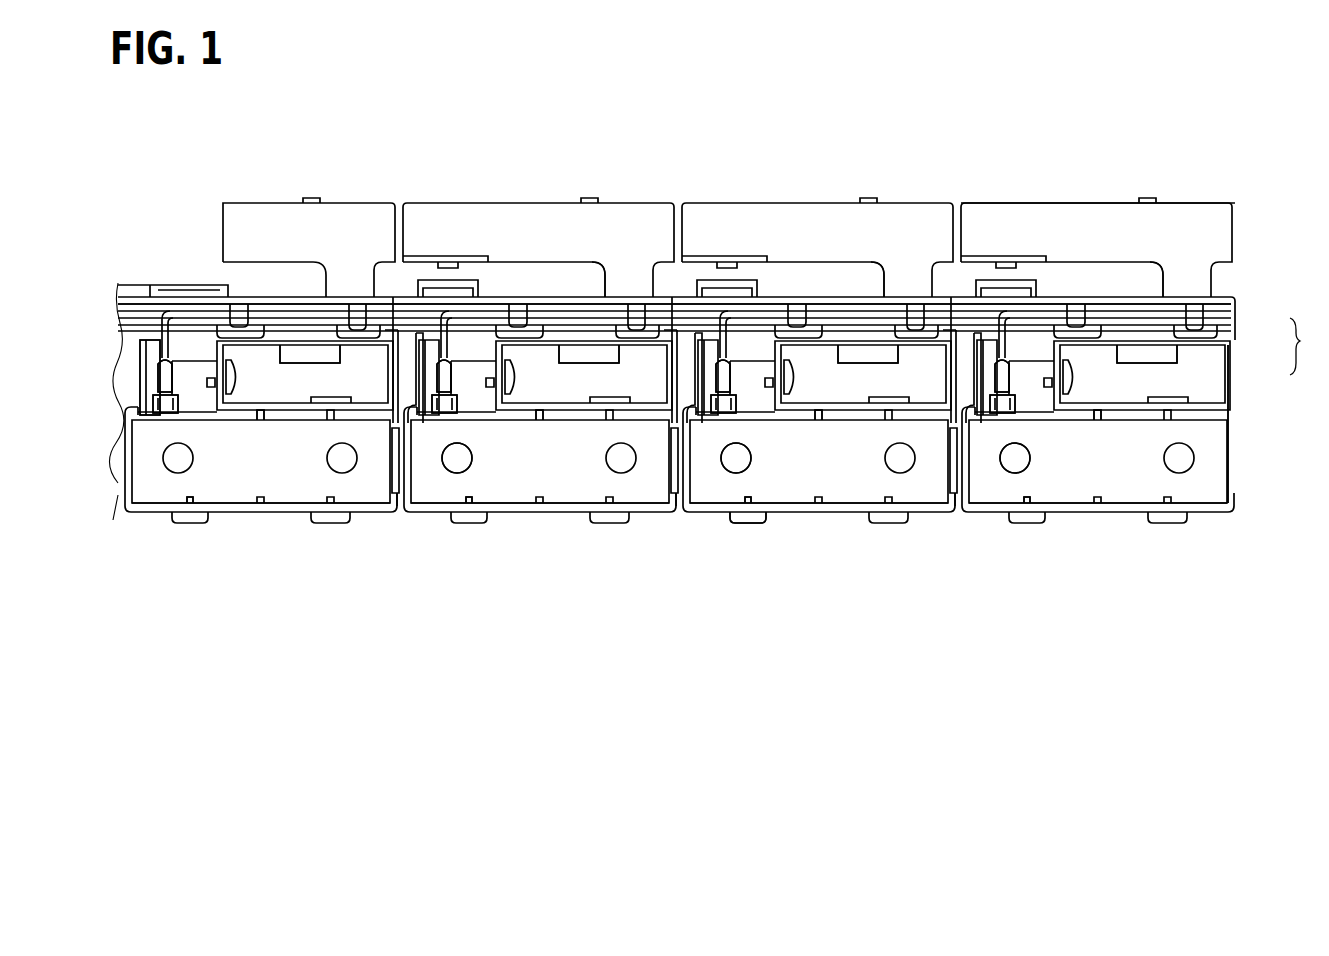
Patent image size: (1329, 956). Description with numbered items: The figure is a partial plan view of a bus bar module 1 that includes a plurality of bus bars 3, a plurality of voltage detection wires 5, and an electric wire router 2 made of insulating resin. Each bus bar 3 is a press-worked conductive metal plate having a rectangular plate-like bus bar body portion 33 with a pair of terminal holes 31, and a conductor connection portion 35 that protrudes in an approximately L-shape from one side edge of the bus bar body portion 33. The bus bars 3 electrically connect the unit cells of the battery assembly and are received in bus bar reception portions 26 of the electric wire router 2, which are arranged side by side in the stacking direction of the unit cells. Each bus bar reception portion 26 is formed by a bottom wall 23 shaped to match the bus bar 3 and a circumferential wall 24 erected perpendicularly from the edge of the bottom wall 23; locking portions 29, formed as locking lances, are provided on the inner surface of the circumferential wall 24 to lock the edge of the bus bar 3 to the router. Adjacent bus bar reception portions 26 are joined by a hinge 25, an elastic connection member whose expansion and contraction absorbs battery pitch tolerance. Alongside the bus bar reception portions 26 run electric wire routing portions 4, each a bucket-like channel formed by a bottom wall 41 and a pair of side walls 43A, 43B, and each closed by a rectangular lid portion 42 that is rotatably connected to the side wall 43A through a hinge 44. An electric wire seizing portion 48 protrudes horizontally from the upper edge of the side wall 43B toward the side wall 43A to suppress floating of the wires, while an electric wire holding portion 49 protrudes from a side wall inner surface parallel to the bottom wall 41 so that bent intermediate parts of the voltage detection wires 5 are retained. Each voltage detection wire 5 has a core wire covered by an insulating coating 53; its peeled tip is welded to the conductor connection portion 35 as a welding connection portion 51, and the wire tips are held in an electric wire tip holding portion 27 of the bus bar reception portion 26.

The bus bar module 1 is at (821, 106).
The electric wire router 2 is at (808, 514).
The bus bar 3 is at (247, 470).
The electric wire routing portion 4 is at (312, 335).
The voltage detection wire 5 is at (172, 348).
The bottom wall 23 is at (1181, 335).
The circumferential wall 24 is at (1233, 452).
The hinge 25 is at (392, 458).
The bus bar reception portion 26 is at (1308, 346).
The electric wire tip holding portion 27 is at (163, 405).
The locking portion 29 is at (260, 504).
The terminal hole 31 is at (459, 474).
The bus bar body portion 33 is at (308, 486).
The conductor connection portion 35 is at (188, 366).
The bottom wall 41 is at (1190, 300).
The lid portion 42 is at (305, 215).
The side wall 43A is at (850, 348).
The side wall 43B is at (258, 290).
The hinge 44 is at (625, 282).
The electric wire seizing portion 48 is at (240, 304).
The electric wire holding portion 49 is at (357, 320).
The welding connection portion 51 is at (190, 415).
The insulating coating 53 is at (150, 413).